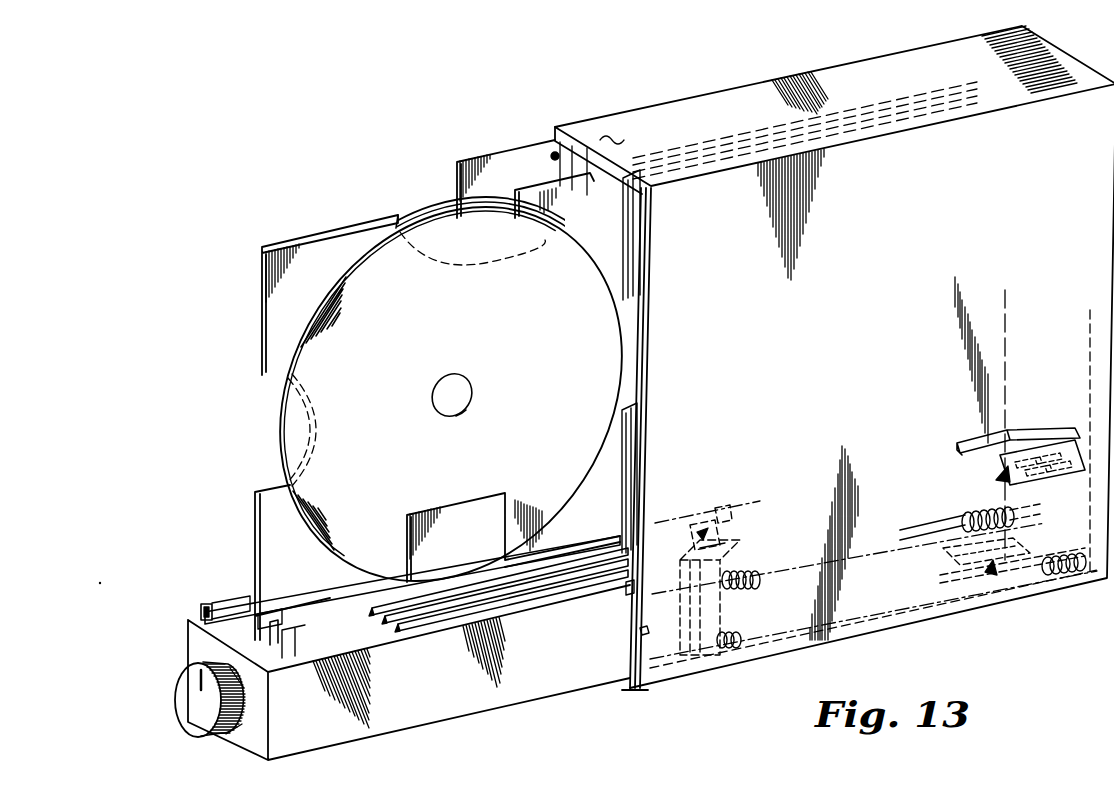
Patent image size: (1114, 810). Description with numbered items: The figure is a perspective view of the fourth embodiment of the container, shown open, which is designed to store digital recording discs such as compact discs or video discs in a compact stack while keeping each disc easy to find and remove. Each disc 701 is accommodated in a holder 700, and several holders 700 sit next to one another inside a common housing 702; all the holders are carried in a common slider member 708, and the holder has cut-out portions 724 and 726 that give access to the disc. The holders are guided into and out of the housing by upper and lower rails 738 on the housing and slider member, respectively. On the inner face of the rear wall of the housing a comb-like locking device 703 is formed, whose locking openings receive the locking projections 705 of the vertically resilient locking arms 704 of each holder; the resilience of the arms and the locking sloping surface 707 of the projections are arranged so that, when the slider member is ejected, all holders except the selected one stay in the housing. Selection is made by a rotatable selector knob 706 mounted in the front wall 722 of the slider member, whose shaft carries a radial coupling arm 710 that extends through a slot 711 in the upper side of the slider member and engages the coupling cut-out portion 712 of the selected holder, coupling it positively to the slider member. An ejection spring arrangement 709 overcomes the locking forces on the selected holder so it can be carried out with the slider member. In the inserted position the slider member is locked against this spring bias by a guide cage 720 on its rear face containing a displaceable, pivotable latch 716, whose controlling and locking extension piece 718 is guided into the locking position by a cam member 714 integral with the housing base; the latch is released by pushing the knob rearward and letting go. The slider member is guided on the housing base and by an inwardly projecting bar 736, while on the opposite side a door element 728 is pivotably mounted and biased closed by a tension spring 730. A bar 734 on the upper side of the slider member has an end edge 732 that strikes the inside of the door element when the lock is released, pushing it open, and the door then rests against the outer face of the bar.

The holder 700 is at (333, 250).
The disk 701 is at (292, 420).
The housing 702 is at (657, 118).
The locking device 703 is at (1002, 474).
The locking arm 704 is at (718, 512).
The locking projection 705 is at (735, 528).
The selector knob 706 is at (185, 683).
The locking sloping surface 707 is at (690, 528).
The slider member 708 is at (556, 681).
The ejection spring arrangement 709 is at (922, 538).
The coupling arm 710 is at (284, 628).
The slot 711 is at (303, 664).
The coupling cut-out portion 712 is at (280, 622).
The cam member 714 is at (990, 572).
The latch 716 is at (703, 546).
The controlling and locking extension piece 718 is at (646, 634).
The guide cage 720 is at (738, 555).
The front wall 722 is at (250, 725).
The cut-out portion 724 is at (406, 225).
The cut-out portion 726 is at (265, 490).
The door element 728 is at (503, 163).
The tension spring 730 is at (600, 140).
The end edge 732 is at (203, 606).
The bar 734 is at (236, 608).
The inwardly projecting bar 736 is at (628, 604).
The rails 738 is at (888, 118).